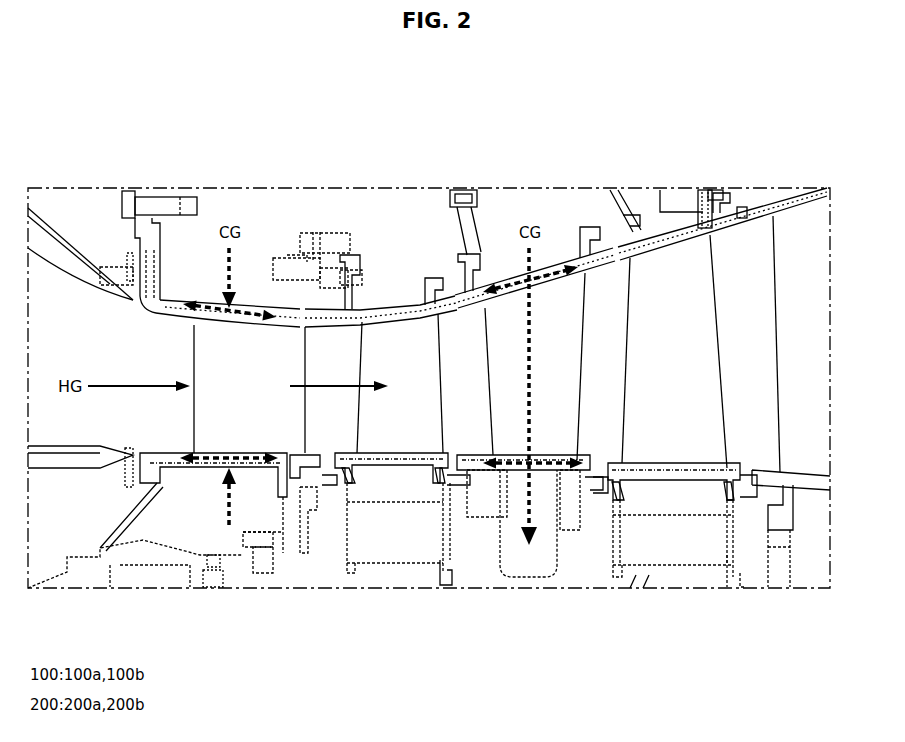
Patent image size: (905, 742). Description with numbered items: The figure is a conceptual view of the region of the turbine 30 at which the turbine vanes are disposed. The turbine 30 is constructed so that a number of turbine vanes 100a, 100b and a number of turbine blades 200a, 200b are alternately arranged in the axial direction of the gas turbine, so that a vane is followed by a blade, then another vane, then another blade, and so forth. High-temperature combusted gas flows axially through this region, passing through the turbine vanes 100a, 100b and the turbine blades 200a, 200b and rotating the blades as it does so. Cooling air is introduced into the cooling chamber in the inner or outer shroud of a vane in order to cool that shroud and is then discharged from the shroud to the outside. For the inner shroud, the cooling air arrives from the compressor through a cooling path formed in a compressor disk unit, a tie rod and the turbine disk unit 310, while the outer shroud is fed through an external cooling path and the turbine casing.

The turbine 30 is at (552, 180).
The turbine vane 100a is at (227, 438).
The turbine vane 100b is at (517, 442).
The turbine blade 200a is at (407, 438).
The turbine blade 200b is at (690, 440).
The turbine disk unit 310 is at (263, 574).